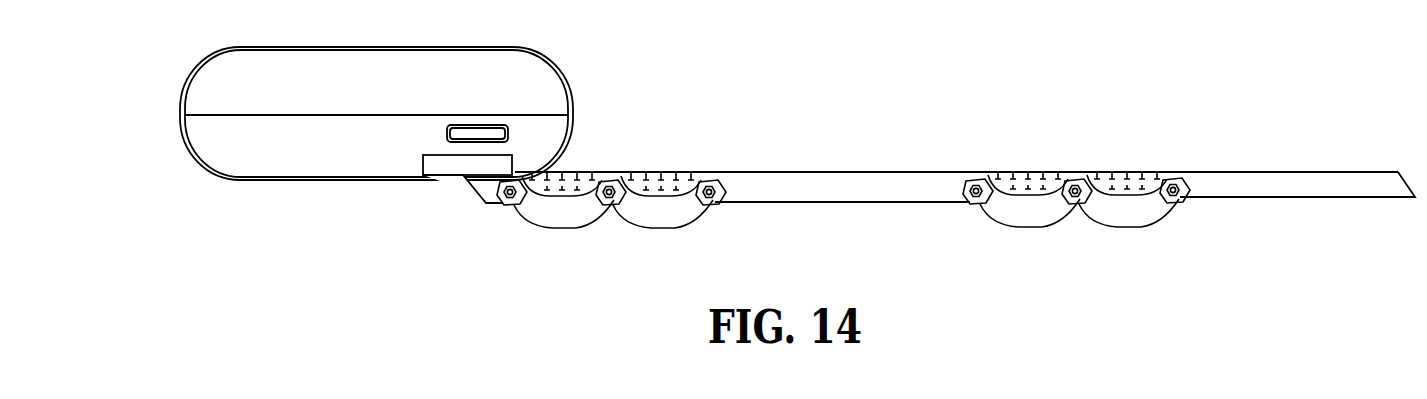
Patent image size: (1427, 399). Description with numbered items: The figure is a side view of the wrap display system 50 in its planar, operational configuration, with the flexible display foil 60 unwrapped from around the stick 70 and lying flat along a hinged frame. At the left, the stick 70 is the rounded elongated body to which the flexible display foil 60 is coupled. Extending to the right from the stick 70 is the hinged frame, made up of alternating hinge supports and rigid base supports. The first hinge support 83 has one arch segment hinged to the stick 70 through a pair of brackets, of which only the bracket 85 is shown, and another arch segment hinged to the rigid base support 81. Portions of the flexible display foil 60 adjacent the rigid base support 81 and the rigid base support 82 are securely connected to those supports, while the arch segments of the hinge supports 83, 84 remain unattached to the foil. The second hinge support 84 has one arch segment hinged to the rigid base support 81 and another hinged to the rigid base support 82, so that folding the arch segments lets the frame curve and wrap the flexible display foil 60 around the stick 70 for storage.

The wrap display system 50 is at (797, 152).
The stick 70 is at (551, 57).
The flexible display foil 60 is at (947, 206).
The bracket 85 is at (477, 187).
The hinge support 83 is at (650, 213).
The hinge support 84 is at (1117, 210).
The rigid base support 81 is at (810, 188).
The rigid base support 82 is at (1280, 185).